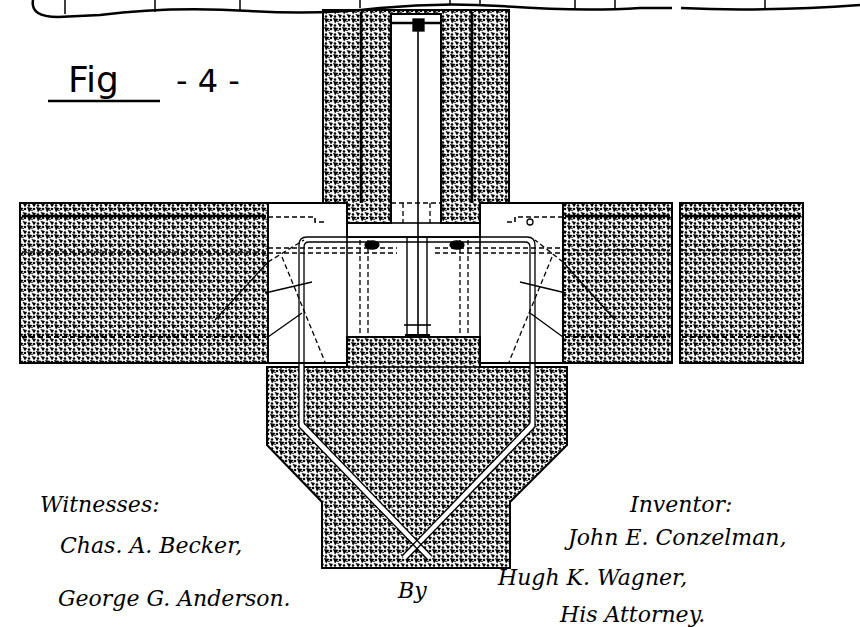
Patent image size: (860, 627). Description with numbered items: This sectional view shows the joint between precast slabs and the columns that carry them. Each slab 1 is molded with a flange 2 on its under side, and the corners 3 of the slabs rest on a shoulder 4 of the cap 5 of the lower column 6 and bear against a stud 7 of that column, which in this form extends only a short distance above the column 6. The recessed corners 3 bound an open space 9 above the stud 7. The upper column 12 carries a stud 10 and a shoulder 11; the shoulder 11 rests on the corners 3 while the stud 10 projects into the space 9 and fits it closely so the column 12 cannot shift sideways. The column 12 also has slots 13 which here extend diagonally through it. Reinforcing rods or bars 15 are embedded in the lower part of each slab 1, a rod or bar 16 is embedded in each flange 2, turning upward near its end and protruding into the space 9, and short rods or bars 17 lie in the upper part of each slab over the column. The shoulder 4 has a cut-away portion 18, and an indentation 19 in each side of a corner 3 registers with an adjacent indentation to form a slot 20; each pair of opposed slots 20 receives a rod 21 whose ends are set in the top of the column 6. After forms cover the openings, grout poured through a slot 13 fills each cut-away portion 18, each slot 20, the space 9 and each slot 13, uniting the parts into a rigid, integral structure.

The slab 1 is at (167, 203).
The flange 2 is at (240, 363).
The corner of slab 3 is at (348, 322).
The shoulder 4 is at (330, 362).
The cap 5 is at (267, 420).
The column 6 is at (508, 530).
The stud 7 is at (432, 337).
The open space 9 is at (428, 287).
The stud 10 is at (323, 195).
The shoulder 11 is at (401, 30).
The column 12 is at (509, 72).
The slot 13 is at (401, 117).
The reinforcing rods or bars 15 is at (40, 203).
The rod or bar 16 is at (65, 363).
The short rods or bars 17 is at (305, 221).
The cut-away portion 18 is at (270, 375).
The indentation 19 is at (415, 299).
The slot 20 is at (410, 322).
The rods 21 is at (416, 268).